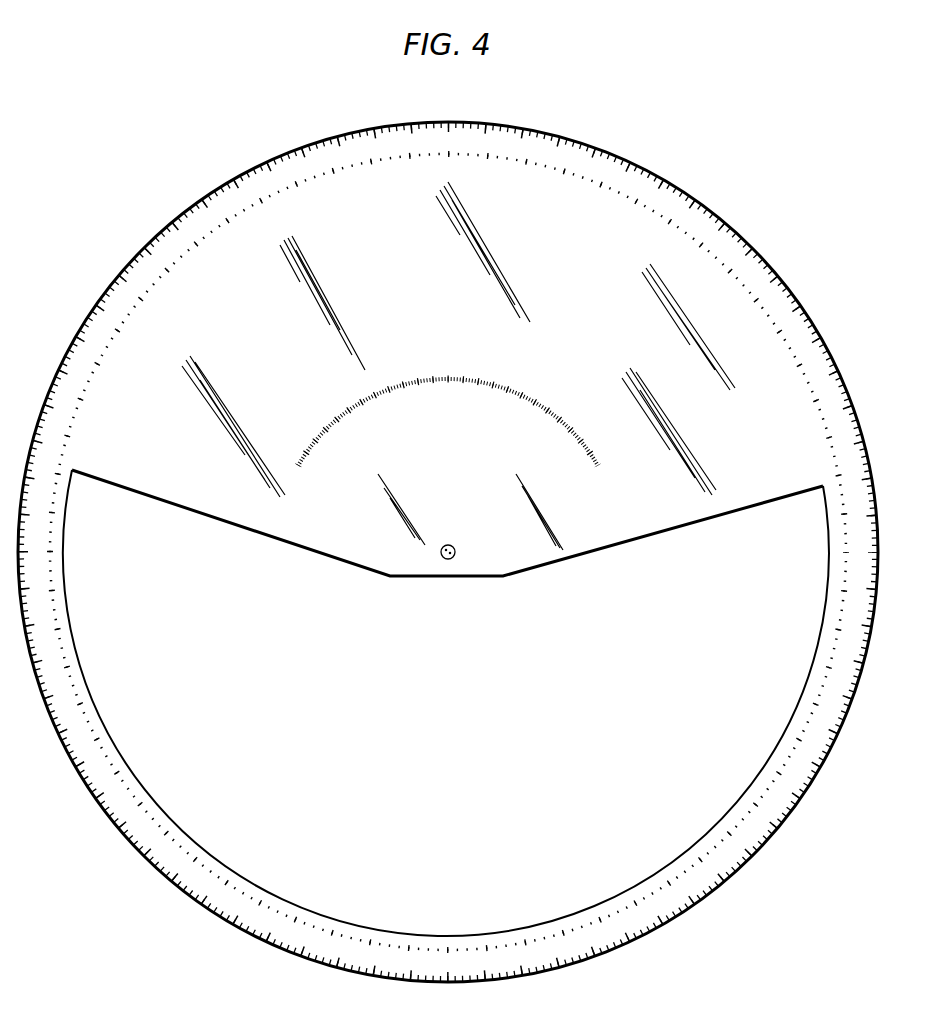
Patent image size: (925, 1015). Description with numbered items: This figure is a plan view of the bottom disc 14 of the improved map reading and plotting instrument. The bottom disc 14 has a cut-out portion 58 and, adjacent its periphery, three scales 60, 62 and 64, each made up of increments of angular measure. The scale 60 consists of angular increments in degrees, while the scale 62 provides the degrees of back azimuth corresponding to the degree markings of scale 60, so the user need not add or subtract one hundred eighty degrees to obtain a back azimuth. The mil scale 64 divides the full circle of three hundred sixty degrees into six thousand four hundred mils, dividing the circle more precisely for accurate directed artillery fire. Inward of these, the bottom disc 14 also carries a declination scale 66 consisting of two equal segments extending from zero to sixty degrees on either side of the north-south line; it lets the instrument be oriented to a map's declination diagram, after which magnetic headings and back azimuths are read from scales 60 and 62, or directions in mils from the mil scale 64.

The bottom disc 14 is at (744, 229).
The cut-out portion 58 is at (148, 497).
The scale 60 is at (702, 203).
The scale 62 is at (772, 305).
The mil scale 64 is at (800, 360).
The declination scale 66 is at (483, 383).